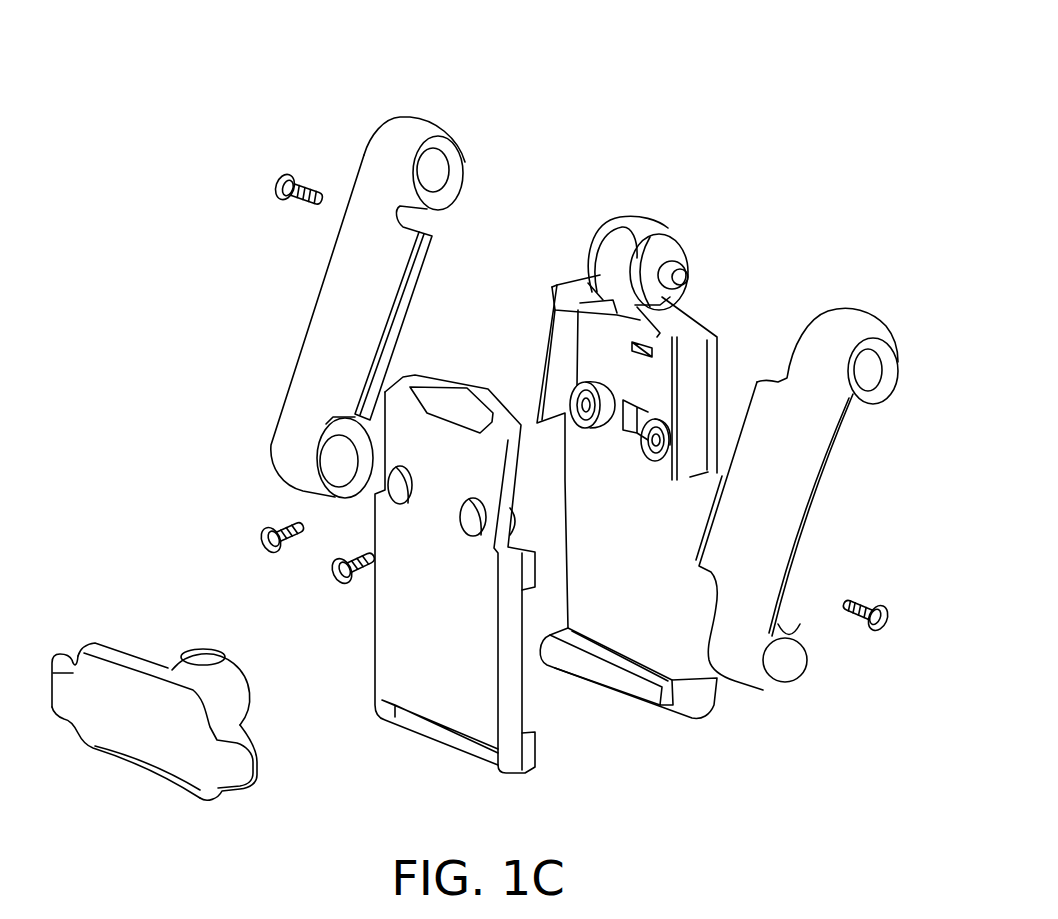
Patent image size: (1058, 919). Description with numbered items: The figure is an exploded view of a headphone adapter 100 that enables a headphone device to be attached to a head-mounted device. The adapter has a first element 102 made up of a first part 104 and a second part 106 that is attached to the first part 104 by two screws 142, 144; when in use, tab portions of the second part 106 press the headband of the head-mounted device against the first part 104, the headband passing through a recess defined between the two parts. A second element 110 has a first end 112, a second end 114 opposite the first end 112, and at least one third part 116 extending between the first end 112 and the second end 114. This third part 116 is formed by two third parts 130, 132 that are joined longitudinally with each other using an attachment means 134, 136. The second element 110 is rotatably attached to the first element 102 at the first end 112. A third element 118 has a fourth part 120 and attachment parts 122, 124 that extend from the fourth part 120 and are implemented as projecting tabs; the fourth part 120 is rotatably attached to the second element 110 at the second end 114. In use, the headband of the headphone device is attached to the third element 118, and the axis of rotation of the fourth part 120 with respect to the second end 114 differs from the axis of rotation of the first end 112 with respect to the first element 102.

The headphone adapter 100 is at (772, 71).
The first element 102 is at (682, 216).
The first part 104 is at (560, 281).
The second part 106 is at (388, 641).
The second element 110 is at (345, 116).
The first end 112 is at (426, 122).
The second end 114 is at (298, 483).
The third part 116 is at (347, 157).
The third element 118 is at (97, 612).
The fourth part 120 is at (142, 752).
The attachment part 122 is at (62, 690).
The attachment part 124 is at (238, 768).
The third part 130 is at (792, 498).
The third part 132 is at (305, 331).
The attachment means 134 is at (878, 632).
The attachment means 136 is at (272, 182).
The screw 142 is at (260, 553).
The screw 144 is at (333, 573).